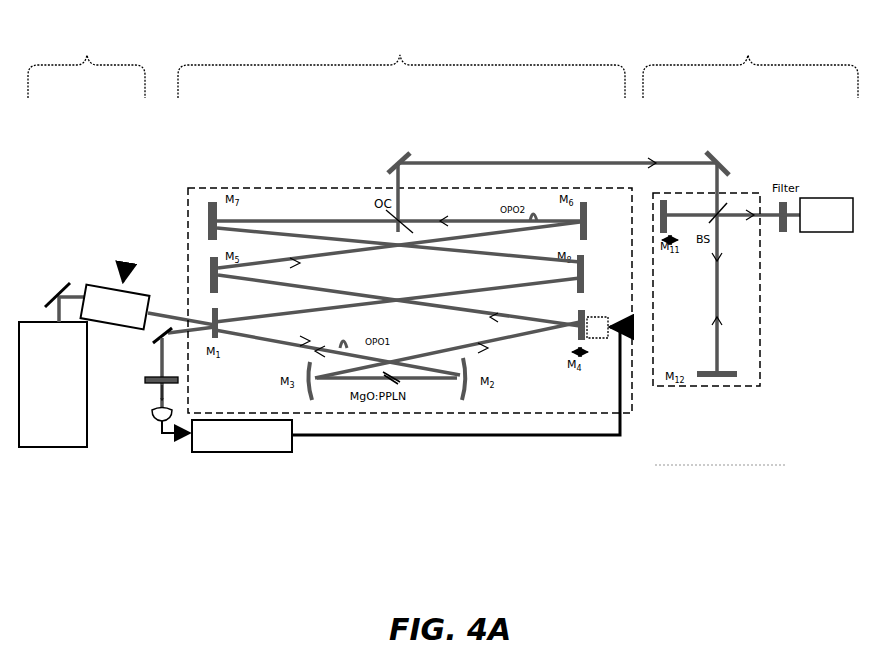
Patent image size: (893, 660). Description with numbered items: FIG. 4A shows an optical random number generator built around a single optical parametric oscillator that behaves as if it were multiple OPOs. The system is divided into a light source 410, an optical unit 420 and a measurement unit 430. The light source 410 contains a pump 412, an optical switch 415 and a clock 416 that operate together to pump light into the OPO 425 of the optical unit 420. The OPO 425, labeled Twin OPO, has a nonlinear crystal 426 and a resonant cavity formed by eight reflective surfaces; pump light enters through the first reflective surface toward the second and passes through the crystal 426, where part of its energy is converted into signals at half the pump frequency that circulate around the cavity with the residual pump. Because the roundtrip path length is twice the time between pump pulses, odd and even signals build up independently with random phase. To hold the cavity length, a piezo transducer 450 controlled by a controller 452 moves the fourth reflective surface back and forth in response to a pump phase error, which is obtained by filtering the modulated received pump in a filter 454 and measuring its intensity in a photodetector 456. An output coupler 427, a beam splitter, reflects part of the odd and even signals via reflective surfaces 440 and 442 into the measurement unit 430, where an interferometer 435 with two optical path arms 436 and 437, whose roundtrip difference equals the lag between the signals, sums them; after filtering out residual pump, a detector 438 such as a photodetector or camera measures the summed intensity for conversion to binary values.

The light source 410 is at (86, 58).
The optical unit 420 is at (401, 58).
The measurement unit 430 is at (750, 58).
The pump 412 is at (52, 452).
The optical switch 415 is at (97, 282).
The clock 416 is at (112, 245).
The OPO 425 is at (290, 183).
The nonlinear crystal 426 is at (388, 416).
The output coupler 427 is at (360, 196).
The interferometer 435 is at (760, 370).
The optical path arm 436 is at (724, 240).
The optical path arm 437 is at (692, 222).
The detector 438 is at (830, 236).
The reflective surface 440 is at (412, 153).
The reflective surface 442 is at (737, 147).
The piezo transducer 450 is at (602, 350).
The controller 452 is at (252, 454).
The filter 454 is at (128, 380).
The photodetector 456 is at (155, 434).